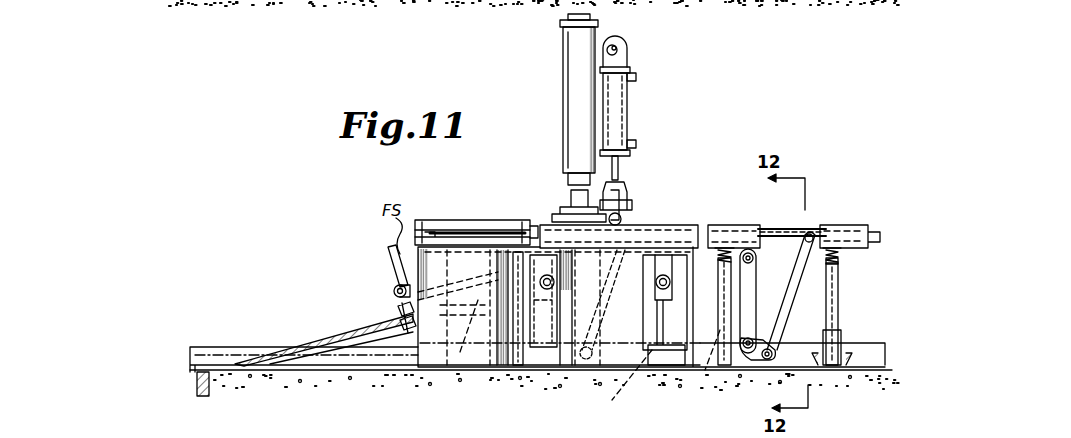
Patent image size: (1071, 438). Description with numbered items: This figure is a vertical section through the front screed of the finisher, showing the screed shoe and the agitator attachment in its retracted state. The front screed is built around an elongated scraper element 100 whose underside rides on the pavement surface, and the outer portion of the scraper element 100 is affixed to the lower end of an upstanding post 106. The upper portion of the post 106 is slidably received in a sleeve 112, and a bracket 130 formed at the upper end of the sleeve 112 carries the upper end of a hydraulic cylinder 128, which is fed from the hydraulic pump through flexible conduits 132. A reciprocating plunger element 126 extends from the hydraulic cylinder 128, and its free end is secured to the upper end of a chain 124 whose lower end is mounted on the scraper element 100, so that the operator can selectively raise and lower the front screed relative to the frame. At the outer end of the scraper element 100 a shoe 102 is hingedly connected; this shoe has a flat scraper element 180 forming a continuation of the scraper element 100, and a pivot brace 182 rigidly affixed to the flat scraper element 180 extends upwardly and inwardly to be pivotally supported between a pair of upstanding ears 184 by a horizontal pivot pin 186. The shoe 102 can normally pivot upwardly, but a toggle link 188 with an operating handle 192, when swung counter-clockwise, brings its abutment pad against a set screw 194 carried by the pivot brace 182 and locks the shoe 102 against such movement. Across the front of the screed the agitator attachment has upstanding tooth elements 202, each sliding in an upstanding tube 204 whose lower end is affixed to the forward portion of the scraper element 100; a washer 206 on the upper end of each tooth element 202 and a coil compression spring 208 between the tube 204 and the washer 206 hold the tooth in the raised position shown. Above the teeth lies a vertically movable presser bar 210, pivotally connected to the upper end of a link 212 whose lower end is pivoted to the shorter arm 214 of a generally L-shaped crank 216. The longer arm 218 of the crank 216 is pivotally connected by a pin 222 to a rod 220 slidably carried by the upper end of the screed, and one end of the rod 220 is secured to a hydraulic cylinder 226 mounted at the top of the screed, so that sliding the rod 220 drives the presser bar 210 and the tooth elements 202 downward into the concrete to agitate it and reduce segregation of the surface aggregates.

The scraper element 100 is at (503, 367).
The shoe 102 is at (220, 353).
The post 106 is at (570, 182).
The sleeve 112 is at (560, 115).
The chain 124 is at (625, 221).
The reciprocating plunger element 126 is at (618, 164).
The hydraulic cylinder 128 is at (627, 122).
The bracket 130 is at (612, 51).
The flexible conduit 132 is at (636, 78).
The flat scraper element 180 is at (305, 372).
The pivot brace 182 is at (345, 334).
The upstanding ear 184 is at (468, 398).
The horizontal pivot pin 186 is at (498, 288).
The toggle link 188 is at (394, 291).
The operating handle 192 is at (388, 255).
The set screw 194 is at (398, 314).
The tooth element 202 is at (555, 387).
The tube 204 is at (496, 261).
The washer 206 is at (838, 250).
The coil compression spring 208 is at (840, 266).
The presser bar 210 is at (862, 224).
The link 212 is at (760, 286).
The shorter arm 214 is at (746, 364).
The L-shaped crank 216 is at (774, 348).
The longer arm 218 is at (790, 294).
The rod 220 is at (792, 210).
The pin 222 is at (812, 235).
The hydraulic cylinder 226 is at (485, 225).